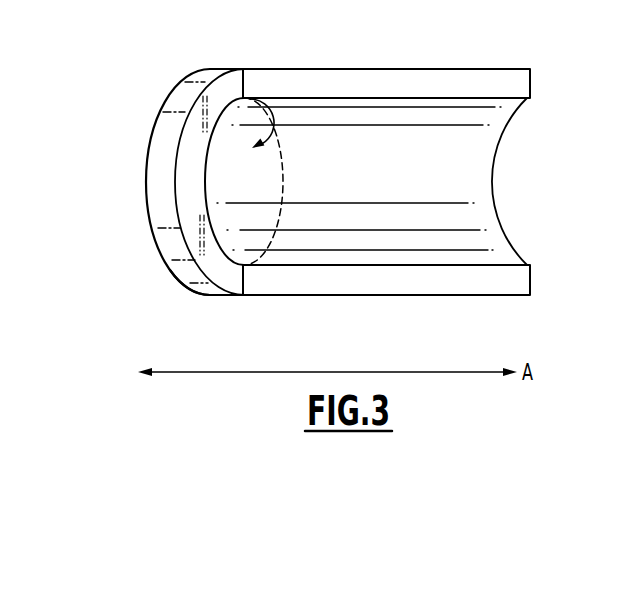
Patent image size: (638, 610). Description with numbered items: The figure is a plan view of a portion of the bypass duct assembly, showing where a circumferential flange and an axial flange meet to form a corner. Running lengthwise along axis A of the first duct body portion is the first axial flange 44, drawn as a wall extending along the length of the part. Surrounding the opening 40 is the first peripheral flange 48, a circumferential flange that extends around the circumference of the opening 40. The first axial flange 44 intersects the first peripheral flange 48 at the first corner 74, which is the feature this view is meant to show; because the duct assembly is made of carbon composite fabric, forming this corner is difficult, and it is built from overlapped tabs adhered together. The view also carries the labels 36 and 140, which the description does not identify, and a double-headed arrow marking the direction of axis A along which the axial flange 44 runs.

The first tube wall 36 is at (385, 117).
The opening 40 is at (275, 125).
The first axial flange 44 is at (398, 284).
The first peripheral flange 48 is at (190, 148).
The curved outer surface 140 is at (157, 247).
The first corner 74 is at (182, 303).